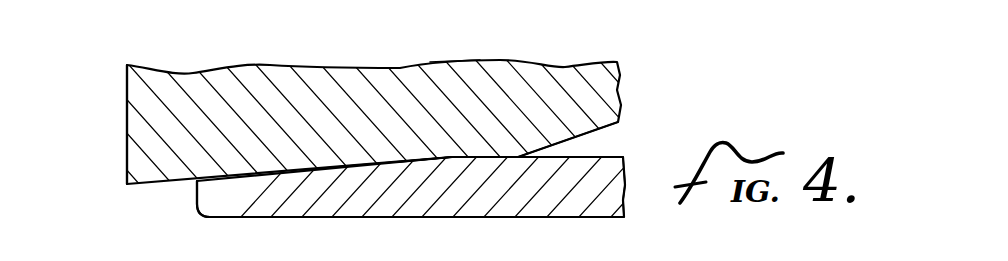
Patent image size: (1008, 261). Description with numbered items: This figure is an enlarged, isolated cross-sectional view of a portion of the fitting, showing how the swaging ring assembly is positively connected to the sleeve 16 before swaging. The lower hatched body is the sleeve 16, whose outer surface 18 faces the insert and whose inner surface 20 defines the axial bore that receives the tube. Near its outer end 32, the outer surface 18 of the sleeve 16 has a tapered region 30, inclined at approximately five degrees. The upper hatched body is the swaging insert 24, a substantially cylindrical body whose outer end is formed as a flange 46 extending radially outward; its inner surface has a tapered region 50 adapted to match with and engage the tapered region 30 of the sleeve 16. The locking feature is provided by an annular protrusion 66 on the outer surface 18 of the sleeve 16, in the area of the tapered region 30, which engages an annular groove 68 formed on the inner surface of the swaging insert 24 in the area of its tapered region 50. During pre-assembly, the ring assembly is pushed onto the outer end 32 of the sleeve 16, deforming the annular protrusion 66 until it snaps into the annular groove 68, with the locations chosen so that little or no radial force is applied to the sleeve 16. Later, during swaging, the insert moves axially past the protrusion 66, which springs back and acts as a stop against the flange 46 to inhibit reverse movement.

The sleeve 16 is at (628, 165).
The outer surface 18 is at (607, 150).
The inner surface 20 is at (287, 218).
The swaging insert 24 is at (530, 60).
The tapered region 30 is at (378, 163).
The outer end 32 is at (197, 182).
The flange 46 is at (127, 110).
The tapered region 50 is at (517, 160).
The annular protrusion 66 is at (440, 157).
The annular groove 68 is at (453, 157).